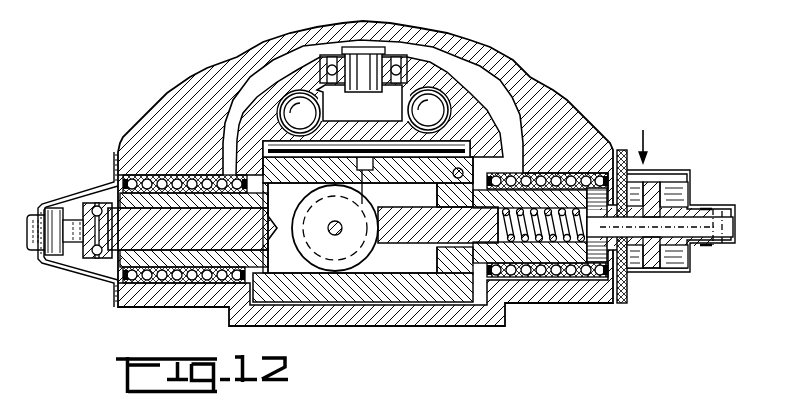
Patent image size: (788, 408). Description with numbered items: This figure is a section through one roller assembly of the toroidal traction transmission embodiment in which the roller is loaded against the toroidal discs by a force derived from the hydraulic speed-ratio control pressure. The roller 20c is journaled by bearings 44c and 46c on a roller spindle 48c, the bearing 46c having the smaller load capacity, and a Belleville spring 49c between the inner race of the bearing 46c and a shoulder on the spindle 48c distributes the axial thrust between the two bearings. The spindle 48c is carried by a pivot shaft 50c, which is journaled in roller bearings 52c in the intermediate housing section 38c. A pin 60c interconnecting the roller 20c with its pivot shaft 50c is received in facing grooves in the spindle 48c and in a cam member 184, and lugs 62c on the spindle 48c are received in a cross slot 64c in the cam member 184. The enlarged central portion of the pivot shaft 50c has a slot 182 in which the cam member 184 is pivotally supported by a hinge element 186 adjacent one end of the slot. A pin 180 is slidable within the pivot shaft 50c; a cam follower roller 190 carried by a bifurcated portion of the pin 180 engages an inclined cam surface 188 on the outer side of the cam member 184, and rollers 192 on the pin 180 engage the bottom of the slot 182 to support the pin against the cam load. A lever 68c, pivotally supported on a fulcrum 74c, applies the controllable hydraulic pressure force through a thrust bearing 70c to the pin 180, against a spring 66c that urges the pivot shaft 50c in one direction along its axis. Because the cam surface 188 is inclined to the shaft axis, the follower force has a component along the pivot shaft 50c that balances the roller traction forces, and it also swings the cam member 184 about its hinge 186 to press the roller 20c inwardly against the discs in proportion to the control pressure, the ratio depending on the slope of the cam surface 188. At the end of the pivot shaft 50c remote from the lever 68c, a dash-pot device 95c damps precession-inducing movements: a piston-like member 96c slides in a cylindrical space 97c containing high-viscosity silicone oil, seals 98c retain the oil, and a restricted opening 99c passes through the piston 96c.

The roller 20c is at (515, 77).
The intermediate housing section 38c is at (558, 113).
The bearing 44c is at (440, 98).
The bearing 46c is at (401, 63).
The roller spindle 48c is at (398, 115).
The spring 49c is at (331, 86).
The pivot shaft 50c is at (453, 295).
The roller bearings 52c is at (171, 193).
The pin 60c is at (362, 150).
The lugs 62c is at (357, 163).
The cross slot 64c is at (335, 228).
The spring 66c is at (633, 279).
The lever 68c is at (72, 262).
The thrust bearing 70c is at (101, 203).
The fulcrum 74c is at (58, 252).
The dash-pot device 95c is at (659, 142).
The piston-like member 96c is at (676, 211).
The cylindrical space 97c is at (668, 268).
The seals 98c is at (733, 196).
The restricted opening 99c is at (669, 182).
The pin 180 is at (211, 238).
The slot 182 is at (263, 198).
The cam member 184 is at (434, 178).
The hinge element 186 is at (473, 161).
The cam surface 188 is at (383, 183).
The cam follower roller 190 is at (308, 193).
The rollers 192 is at (375, 255).